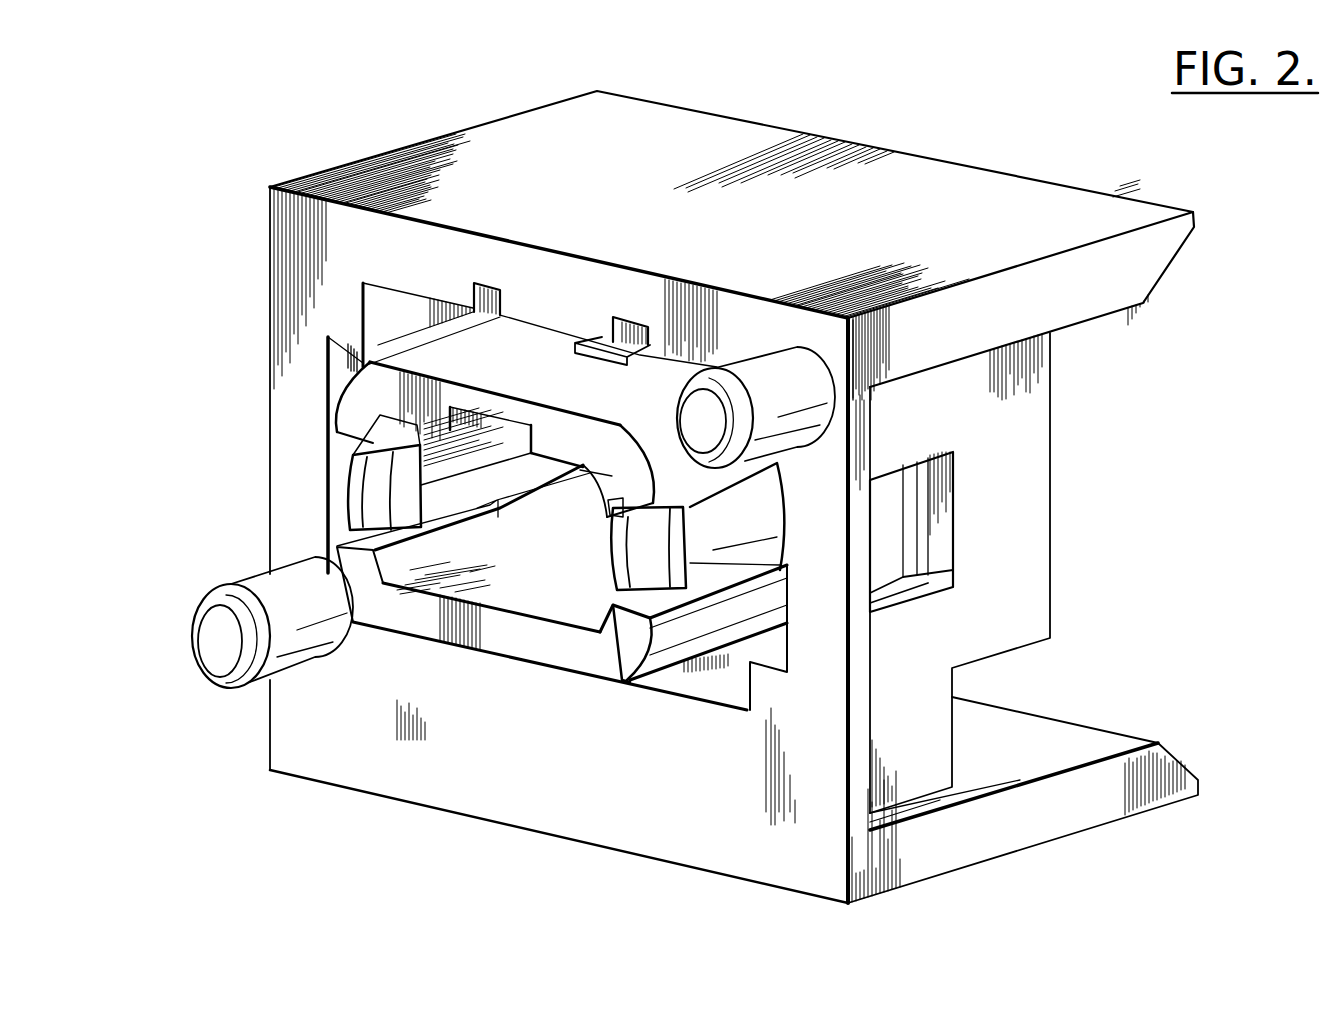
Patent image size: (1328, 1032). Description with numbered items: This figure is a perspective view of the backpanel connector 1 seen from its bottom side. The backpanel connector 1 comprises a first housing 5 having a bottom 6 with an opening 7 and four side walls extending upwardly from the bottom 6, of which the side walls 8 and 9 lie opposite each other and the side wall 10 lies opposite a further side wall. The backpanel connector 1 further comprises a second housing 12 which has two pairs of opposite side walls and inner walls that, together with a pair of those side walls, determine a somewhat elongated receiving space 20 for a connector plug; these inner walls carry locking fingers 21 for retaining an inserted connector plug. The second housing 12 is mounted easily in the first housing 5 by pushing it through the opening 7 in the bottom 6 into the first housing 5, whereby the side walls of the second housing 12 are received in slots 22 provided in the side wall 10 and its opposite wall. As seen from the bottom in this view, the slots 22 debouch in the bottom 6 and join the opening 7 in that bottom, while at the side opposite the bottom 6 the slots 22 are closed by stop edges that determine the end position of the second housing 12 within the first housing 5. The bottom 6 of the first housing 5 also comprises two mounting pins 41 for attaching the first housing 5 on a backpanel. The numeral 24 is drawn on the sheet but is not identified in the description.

The backpanel connector 1 is at (1150, 370).
The first housing 5 is at (318, 156).
The bottom 6 is at (358, 771).
The opening 7 is at (741, 670).
The side wall 8 is at (952, 183).
The side wall 9 is at (1170, 773).
The side wall 10 is at (1032, 567).
The second housing 12 is at (402, 637).
The receiving space 20 is at (556, 590).
The locking fingers 21 is at (380, 483).
The slots 22 is at (345, 358).
The window opening 24 is at (890, 523).
The mounting pins 41 is at (800, 396).